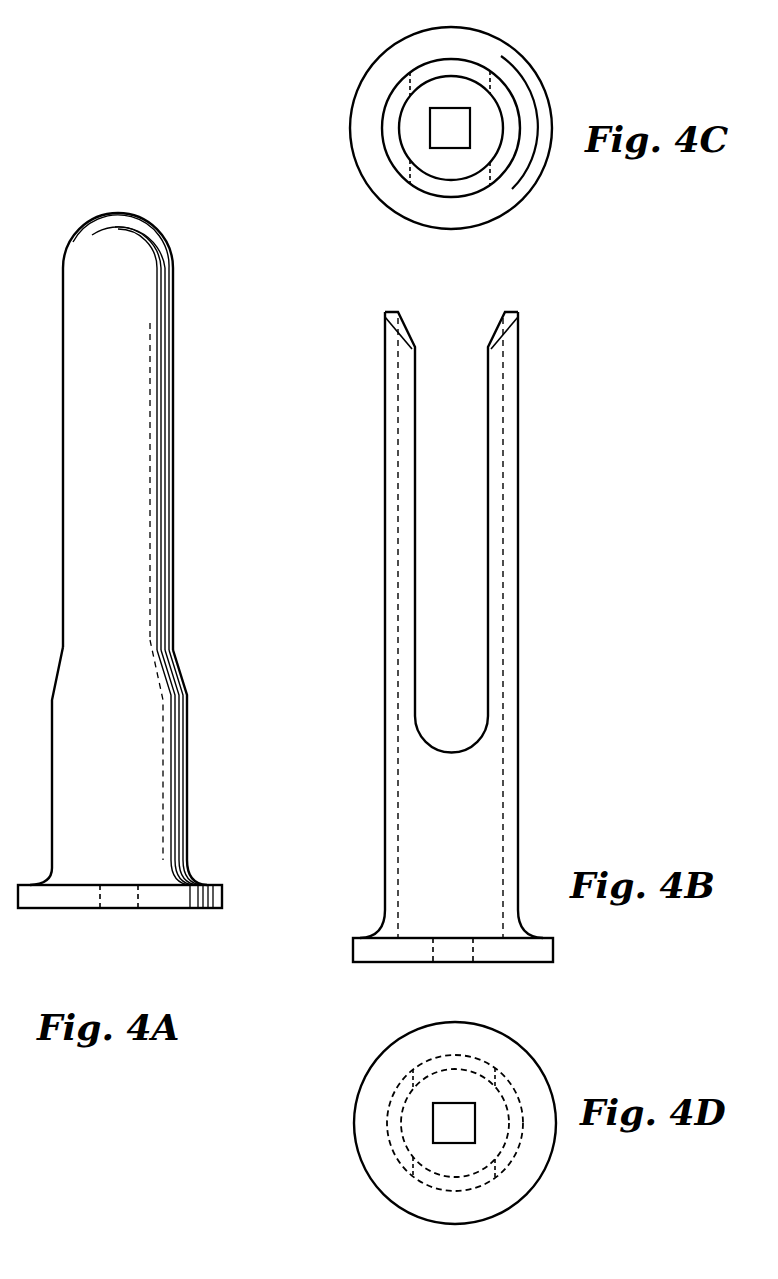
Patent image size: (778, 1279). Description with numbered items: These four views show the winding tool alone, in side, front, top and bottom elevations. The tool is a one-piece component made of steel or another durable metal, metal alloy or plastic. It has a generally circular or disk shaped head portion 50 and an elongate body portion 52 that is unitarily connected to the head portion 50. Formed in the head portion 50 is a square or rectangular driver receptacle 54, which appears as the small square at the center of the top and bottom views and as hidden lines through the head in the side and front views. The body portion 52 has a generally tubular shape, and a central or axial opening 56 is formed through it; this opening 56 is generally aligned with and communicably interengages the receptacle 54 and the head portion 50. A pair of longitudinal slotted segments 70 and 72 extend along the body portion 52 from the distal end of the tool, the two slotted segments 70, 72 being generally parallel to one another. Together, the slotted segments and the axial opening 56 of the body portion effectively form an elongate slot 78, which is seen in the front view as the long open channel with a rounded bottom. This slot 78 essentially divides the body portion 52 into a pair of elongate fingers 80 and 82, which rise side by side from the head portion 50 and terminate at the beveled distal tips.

In FIG. 4A, the head portion 50 is at (222, 889).
In FIG. 4B, the head portion 50 is at (553, 938).
In FIG. 4D, the head portion 50 is at (537, 1067).
In FIG. 4A, the body portion 52 is at (187, 737).
In FIG. 4B, the body portion 52 is at (518, 778).
In FIG. 4C, the driver receptacle 54 is at (458, 120).
In FIG. 4A, the driver receptacle 54 is at (138, 897).
In FIG. 4B, the driver receptacle 54 is at (458, 937).
In FIG. 4D, the driver receptacle 54 is at (475, 1128).
In FIG. 4B, the axial opening 56 is at (503, 803).
In FIG. 4C, the slotted segment 70 is at (472, 182).
In FIG. 4B, the slotted segment 70 is at (471, 519).
In FIG. 4C, the slotted segment 72 is at (427, 70).
In FIG. 4B, the elongate slot 78 is at (449, 596).
In FIG. 4C, the finger 80 is at (512, 120).
In FIG. 4A, the finger 80 is at (173, 472).
In FIG. 4B, the finger 80 is at (488, 368).
In FIG. 4C, the finger 82 is at (390, 115).
In FIG. 4B, the finger 82 is at (415, 473).